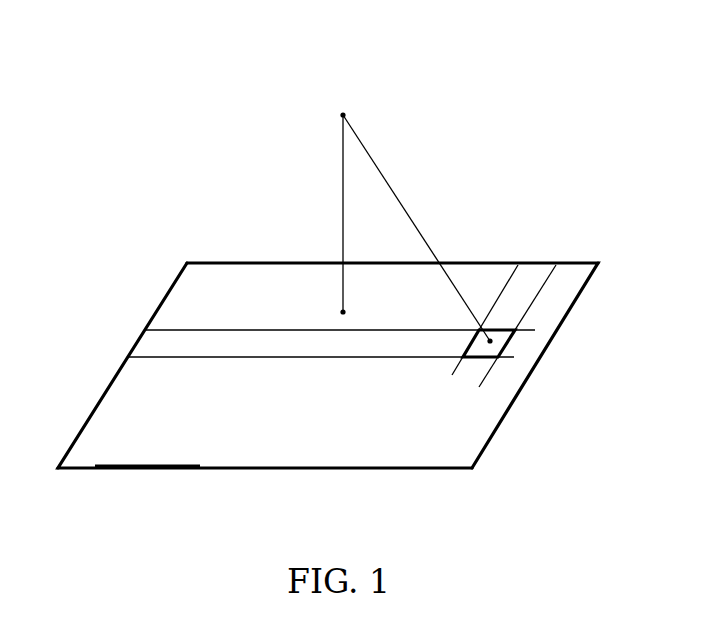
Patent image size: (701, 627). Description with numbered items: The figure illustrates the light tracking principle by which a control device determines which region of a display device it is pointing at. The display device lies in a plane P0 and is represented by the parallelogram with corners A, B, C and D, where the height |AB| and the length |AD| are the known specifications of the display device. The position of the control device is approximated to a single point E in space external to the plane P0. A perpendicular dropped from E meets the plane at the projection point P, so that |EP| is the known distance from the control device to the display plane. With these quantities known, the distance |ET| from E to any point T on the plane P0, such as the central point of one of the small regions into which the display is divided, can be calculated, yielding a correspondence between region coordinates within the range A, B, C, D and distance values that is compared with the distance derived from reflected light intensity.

The point E is at (398, 216).
The projection point P is at (330, 303).
The point T is at (489, 331).
The corner A is at (173, 253).
The corner B is at (46, 466).
The corner C is at (483, 478).
The corner D is at (608, 263).
The plane P0 is at (147, 453).